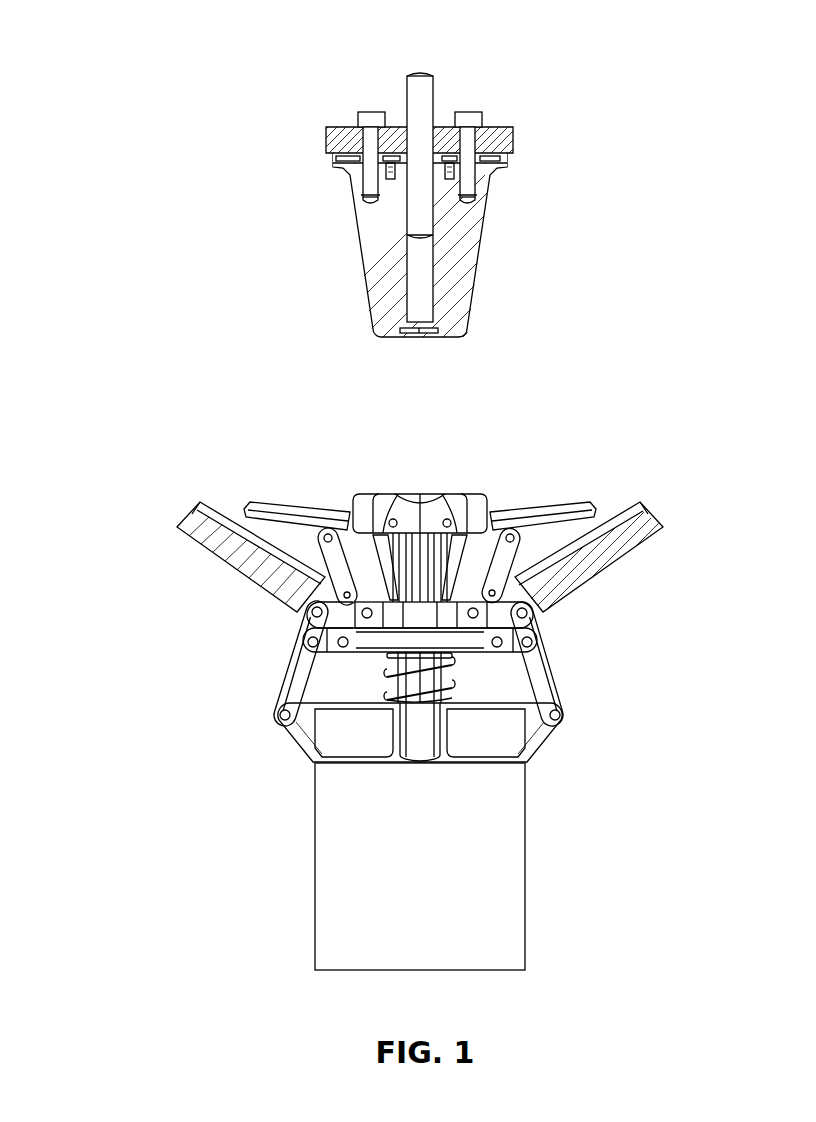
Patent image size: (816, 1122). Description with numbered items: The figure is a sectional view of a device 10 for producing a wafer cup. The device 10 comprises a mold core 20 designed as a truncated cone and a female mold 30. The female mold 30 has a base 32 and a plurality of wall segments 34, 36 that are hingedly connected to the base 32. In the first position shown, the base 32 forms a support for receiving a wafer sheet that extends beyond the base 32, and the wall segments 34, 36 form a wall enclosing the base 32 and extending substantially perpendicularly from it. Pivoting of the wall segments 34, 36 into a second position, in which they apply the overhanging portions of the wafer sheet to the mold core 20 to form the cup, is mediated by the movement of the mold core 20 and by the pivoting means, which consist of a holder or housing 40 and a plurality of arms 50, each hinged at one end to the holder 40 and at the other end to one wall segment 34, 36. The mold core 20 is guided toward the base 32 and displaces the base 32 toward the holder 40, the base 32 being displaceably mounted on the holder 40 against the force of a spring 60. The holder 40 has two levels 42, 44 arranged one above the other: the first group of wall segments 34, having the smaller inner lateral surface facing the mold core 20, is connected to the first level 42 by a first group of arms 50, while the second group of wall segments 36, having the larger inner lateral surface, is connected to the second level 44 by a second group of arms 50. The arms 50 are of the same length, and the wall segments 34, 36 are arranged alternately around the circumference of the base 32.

The device 10 is at (105, 170).
The mold core 20 is at (488, 250).
The female mold 30 is at (278, 735).
The base 32 is at (427, 492).
The wall segments 34 is at (277, 507).
The wall segments 36 is at (215, 553).
The holder 40 is at (412, 937).
The first level 42 is at (530, 641).
The second level 44 is at (570, 713).
The arms 50 is at (545, 673).
The spring 60 is at (388, 675).